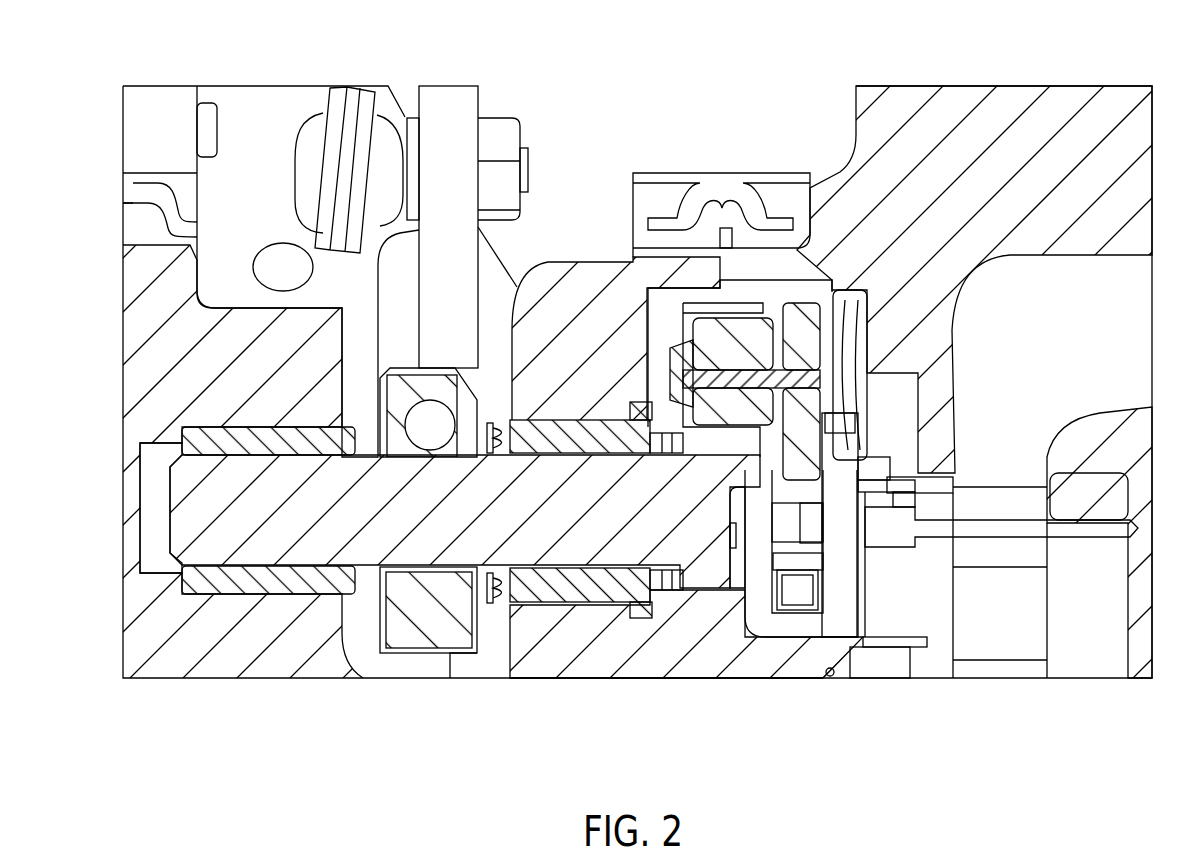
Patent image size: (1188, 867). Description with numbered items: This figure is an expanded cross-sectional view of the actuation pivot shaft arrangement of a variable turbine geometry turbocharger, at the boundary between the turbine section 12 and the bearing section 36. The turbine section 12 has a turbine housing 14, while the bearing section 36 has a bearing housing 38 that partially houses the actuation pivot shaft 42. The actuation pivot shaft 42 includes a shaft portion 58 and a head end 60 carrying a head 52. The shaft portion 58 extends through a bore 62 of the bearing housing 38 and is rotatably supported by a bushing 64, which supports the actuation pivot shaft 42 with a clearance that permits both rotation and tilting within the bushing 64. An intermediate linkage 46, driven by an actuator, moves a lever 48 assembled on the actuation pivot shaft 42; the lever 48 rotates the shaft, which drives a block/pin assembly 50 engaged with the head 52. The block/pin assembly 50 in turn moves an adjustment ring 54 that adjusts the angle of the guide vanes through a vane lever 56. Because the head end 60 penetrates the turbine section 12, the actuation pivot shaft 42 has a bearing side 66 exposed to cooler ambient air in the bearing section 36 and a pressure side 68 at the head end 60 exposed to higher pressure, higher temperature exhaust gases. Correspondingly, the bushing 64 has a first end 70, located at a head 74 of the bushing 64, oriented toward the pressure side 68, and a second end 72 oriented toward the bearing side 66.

The turbine section 12 is at (948, 45).
The turbine housing 14 is at (1005, 108).
The bearing section 36 is at (547, 180).
The bearing housing 38 is at (547, 282).
The actuation pivot shaft 42 is at (573, 555).
The intermediate linkage 46 is at (342, 97).
The lever 48 is at (405, 393).
The block/pin assembly 50 is at (768, 322).
The head 52 is at (710, 585).
The adjustment ring 54 is at (838, 330).
The vane lever 56 is at (868, 372).
The shaft portion 58 is at (376, 575).
The head end 60 is at (677, 652).
The bore 62 is at (152, 443).
The bushing 64 is at (560, 423).
The bearing side 66 is at (494, 655).
The pressure side 68 is at (684, 730).
The first end 70 is at (636, 390).
The second end 72 is at (522, 400).
The head 74 is at (637, 615).